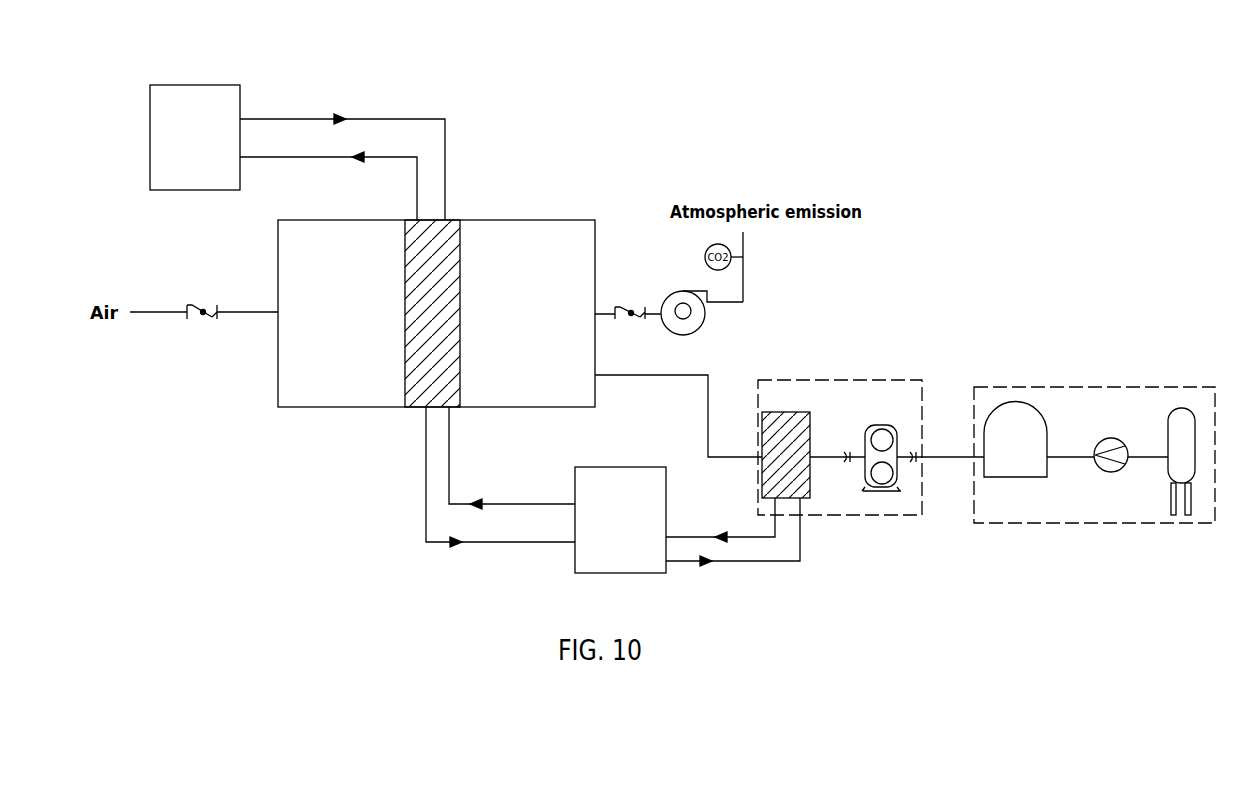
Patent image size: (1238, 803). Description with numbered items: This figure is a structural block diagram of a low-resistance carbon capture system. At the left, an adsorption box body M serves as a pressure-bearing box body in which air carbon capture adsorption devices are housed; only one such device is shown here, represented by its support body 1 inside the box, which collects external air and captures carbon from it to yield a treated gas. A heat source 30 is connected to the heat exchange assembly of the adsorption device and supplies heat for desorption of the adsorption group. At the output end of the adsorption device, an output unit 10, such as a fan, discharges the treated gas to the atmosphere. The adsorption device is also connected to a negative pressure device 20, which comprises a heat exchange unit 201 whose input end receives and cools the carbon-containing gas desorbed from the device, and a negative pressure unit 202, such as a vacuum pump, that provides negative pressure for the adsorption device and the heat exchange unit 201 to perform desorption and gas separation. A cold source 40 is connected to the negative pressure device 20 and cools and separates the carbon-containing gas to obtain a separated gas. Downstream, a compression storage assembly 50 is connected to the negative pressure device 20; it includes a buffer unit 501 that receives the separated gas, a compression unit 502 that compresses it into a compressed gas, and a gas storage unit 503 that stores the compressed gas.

The support body 1 is at (403, 220).
The output unit 10 is at (690, 288).
The negative pressure device 20 is at (755, 334).
The heat exchange unit 201 is at (773, 412).
The negative pressure unit 202 is at (868, 428).
The heat source 30 is at (217, 85).
The cold source 40 is at (577, 577).
The compression storage assembly 50 is at (987, 341).
The buffer unit 501 is at (1003, 403).
The compression unit 502 is at (1100, 443).
The gas storage unit 503 is at (1177, 408).
The adsorption box body M is at (278, 265).